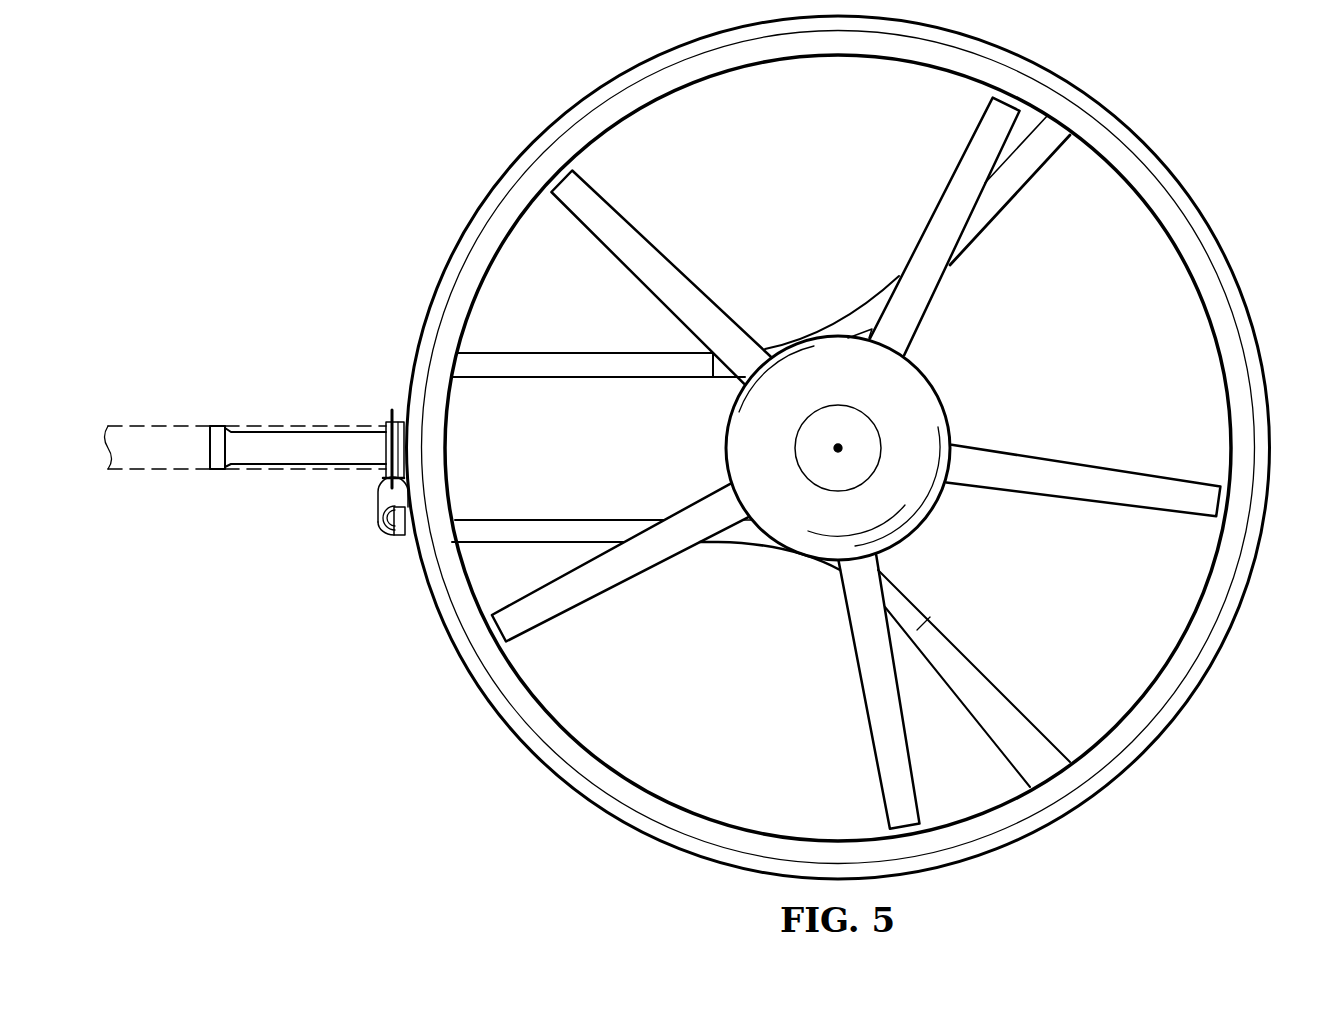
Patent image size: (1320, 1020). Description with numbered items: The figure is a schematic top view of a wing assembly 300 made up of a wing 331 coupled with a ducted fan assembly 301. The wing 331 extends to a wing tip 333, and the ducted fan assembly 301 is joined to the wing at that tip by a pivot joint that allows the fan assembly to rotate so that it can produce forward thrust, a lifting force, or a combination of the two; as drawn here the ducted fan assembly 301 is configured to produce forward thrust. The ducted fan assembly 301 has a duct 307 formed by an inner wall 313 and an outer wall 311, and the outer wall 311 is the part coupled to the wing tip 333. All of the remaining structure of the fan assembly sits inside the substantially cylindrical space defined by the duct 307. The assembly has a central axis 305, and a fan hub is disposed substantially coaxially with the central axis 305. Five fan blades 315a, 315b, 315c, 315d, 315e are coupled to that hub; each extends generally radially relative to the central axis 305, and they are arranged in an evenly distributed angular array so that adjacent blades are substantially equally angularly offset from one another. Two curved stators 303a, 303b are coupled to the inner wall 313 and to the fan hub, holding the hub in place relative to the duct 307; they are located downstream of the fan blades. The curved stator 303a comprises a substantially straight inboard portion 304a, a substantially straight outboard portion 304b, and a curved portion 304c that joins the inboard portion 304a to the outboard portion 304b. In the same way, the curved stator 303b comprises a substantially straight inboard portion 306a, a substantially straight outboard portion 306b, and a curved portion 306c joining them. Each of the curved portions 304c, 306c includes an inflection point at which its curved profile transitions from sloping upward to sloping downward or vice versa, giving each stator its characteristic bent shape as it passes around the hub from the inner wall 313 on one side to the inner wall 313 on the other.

The wing assembly 300 is at (316, 97).
The ducted fan assembly 301 is at (1132, 110).
The curved stator 303a is at (597, 383).
The curved stator 303b is at (527, 516).
The inboard portion 304a is at (556, 352).
The outboard portion 304b is at (1025, 170).
The curved portion 304c is at (836, 318).
The central axis 305 is at (836, 452).
The inboard portion 306a is at (570, 519).
The outboard portion 306b is at (1044, 736).
The curved portion 306c is at (746, 548).
The duct 307 is at (421, 338).
The outer wall 311 is at (1233, 264).
The inner wall 313 is at (1207, 310).
The fan blade 315a is at (1084, 466).
The fan blade 315b is at (935, 210).
The fan blade 315c is at (655, 237).
The fan blade 315d is at (610, 592).
The fan blade 315e is at (858, 706).
The wing 331 is at (263, 470).
The wing tip 333 is at (380, 447).